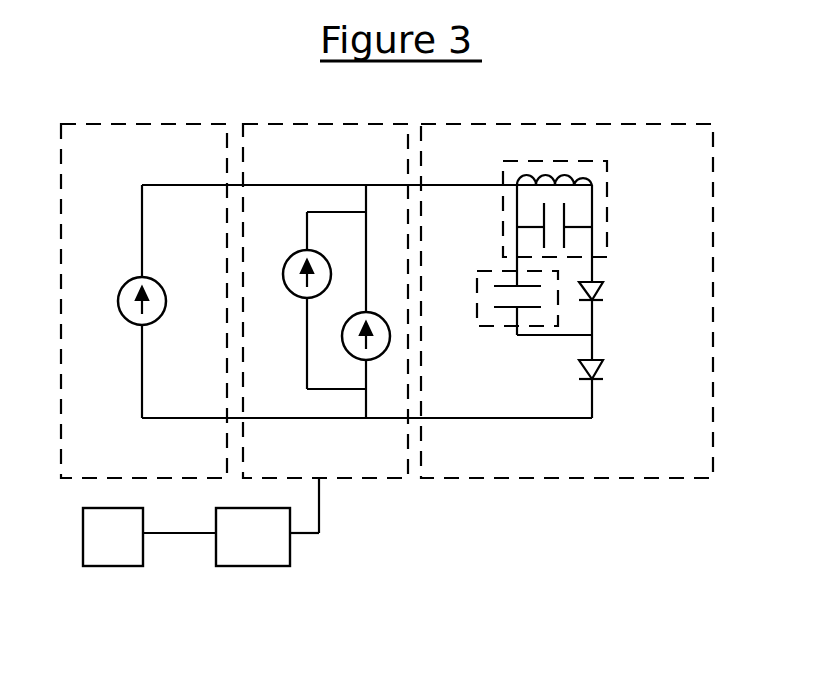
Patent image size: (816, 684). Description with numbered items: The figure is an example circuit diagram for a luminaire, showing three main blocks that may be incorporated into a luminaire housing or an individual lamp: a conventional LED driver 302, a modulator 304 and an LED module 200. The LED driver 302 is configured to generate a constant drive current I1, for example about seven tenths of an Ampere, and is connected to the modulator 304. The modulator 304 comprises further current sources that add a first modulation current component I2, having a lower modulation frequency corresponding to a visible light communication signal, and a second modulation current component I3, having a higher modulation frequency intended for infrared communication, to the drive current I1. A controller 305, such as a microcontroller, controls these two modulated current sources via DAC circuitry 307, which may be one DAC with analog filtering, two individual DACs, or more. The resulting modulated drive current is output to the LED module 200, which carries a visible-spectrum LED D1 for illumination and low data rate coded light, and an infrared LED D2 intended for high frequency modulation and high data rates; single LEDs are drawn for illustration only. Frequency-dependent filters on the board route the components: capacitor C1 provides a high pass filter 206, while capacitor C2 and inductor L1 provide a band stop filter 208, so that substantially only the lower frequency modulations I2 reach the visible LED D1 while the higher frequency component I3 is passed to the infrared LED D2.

The LED driver 302 is at (148, 167).
The modulator 304 is at (347, 167).
The LED module 200 is at (486, 167).
The high pass filter 206 is at (488, 271).
The band stop filter 208 is at (607, 207).
The inductor L1 is at (594, 186).
The capacitor C2 is at (566, 216).
The capacitor C1 is at (508, 309).
The visible-spectrum LED D1 is at (610, 291).
The infrared LED D2 is at (610, 370).
The drive current I1 is at (129, 301).
The first modulation current component I2 is at (367, 324).
The second modulation current component I3 is at (304, 300).
The controller 305 is at (112, 566).
The DAC circuitry 307 is at (250, 566).